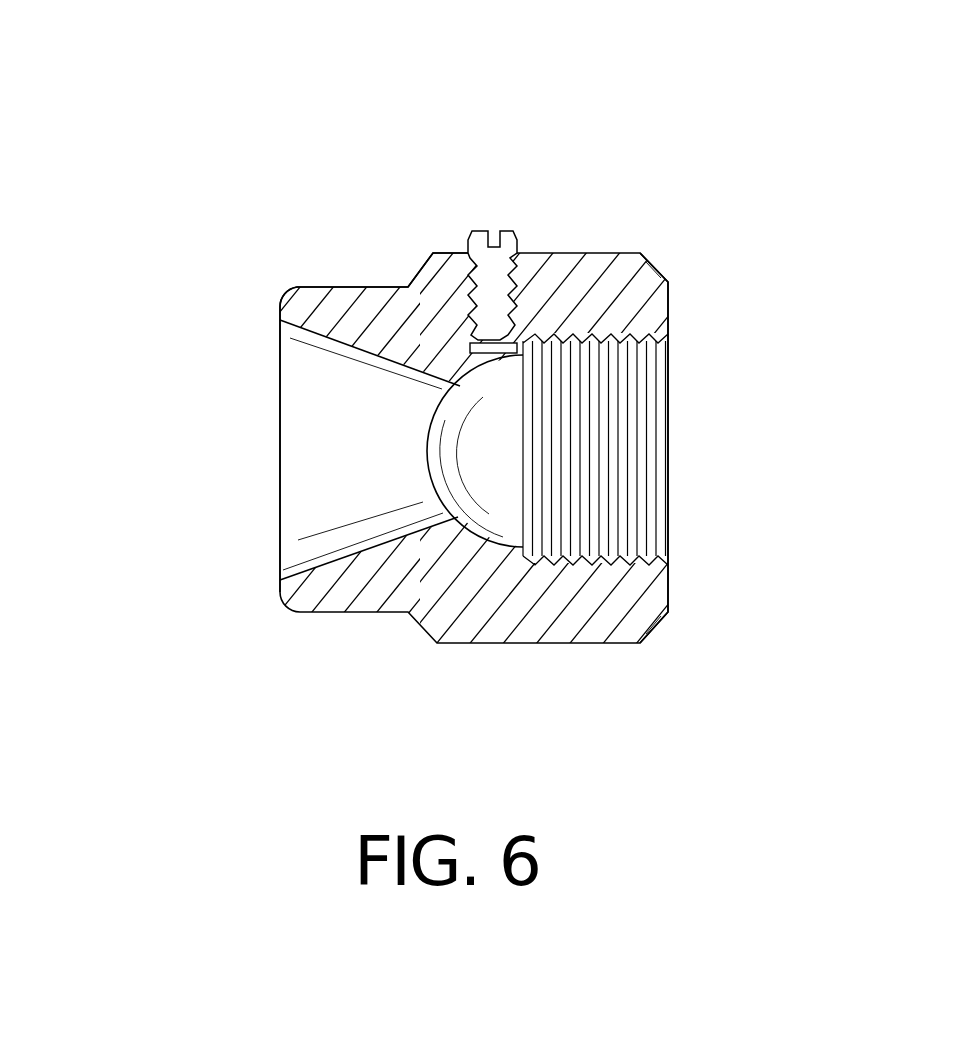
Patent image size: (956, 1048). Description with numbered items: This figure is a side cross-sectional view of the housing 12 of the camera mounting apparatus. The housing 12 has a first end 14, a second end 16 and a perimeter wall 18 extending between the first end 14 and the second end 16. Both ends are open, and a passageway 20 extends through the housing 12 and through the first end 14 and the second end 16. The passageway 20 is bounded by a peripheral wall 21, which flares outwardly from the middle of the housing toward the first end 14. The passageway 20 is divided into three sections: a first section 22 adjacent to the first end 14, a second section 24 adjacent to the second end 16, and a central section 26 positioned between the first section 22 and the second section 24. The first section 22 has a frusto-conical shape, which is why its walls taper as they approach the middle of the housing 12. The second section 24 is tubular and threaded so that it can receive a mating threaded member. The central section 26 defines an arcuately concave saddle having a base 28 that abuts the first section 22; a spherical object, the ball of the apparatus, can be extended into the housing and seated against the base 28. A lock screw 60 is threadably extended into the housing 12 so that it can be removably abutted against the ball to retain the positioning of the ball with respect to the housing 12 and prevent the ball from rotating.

The housing 12 is at (310, 706).
The first end 14 is at (280, 313).
The second end 16 is at (670, 600).
The perimeter wall 18 is at (388, 285).
The passageway 20 is at (305, 452).
The peripheral wall 21 is at (458, 512).
The first section 22 is at (318, 524).
The second section 24 is at (640, 440).
The central section 26 is at (517, 393).
The base 28 is at (437, 433).
The lock screw 60 is at (503, 231).